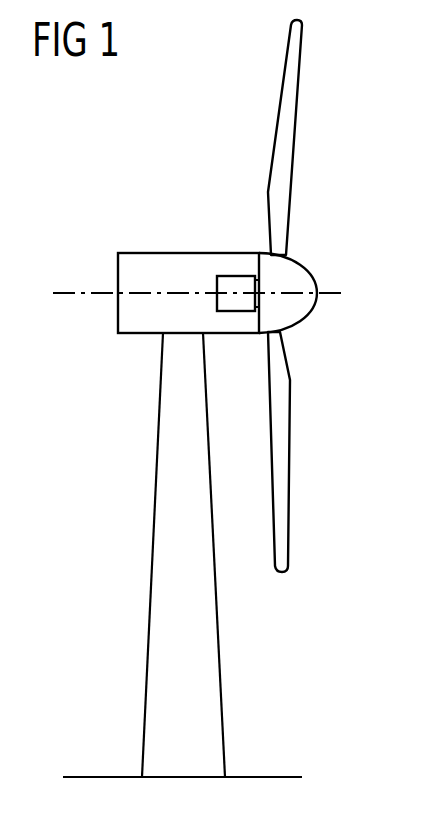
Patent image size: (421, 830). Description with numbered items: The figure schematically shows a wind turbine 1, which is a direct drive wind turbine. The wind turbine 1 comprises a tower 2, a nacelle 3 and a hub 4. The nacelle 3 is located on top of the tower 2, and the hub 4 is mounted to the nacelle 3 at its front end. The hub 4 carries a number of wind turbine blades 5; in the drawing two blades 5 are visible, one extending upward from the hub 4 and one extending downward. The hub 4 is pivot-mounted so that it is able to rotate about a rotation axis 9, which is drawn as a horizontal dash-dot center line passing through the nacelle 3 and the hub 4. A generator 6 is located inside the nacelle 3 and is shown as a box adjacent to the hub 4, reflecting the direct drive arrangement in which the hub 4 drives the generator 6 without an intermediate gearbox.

The wind turbine 1 is at (96, 471).
The tower 2 is at (202, 630).
The nacelle 3 is at (163, 253).
The hub 4 is at (313, 276).
The wind turbine blade 5 is at (285, 129).
The generator 6 is at (234, 283).
The rotation axis 9 is at (67, 292).